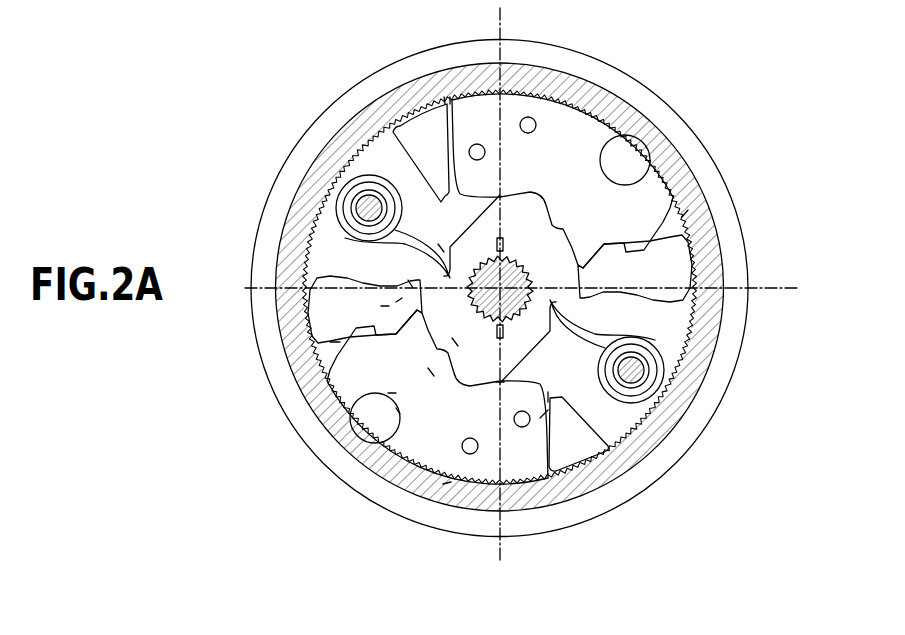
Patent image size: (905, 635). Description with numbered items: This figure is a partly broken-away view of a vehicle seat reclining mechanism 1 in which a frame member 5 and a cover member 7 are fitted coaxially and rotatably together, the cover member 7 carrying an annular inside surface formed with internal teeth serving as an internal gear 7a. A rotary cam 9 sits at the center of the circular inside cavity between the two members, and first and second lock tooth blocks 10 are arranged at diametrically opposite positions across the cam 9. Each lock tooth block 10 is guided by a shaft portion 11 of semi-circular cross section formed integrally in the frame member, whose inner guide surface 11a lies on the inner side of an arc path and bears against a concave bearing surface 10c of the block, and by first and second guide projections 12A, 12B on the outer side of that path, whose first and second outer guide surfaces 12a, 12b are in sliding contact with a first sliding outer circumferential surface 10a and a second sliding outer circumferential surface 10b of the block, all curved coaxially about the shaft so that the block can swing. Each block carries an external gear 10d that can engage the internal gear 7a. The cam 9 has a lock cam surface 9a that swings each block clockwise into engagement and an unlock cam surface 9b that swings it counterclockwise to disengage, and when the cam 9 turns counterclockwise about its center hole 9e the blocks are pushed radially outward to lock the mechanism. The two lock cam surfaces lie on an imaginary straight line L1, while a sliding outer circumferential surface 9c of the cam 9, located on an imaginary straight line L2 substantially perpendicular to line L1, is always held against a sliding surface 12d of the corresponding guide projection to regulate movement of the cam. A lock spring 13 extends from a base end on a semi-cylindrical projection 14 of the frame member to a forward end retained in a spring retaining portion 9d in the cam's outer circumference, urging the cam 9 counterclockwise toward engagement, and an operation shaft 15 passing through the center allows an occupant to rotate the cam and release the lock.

The vehicle seat reclining mechanism 1 is at (243, 48).
The frame member 5 is at (652, 106).
The cover member 7 is at (519, 287).
The internal gear 7a is at (661, 195).
The cam 9 is at (522, 251).
The lock cam surface 9a is at (502, 393).
The unlock cam surface 9b is at (430, 372).
The sliding outer circumferential surface 9c is at (412, 285).
The spring retaining portion 9d is at (440, 248).
The center hole 9e is at (455, 342).
The lock tooth block 10 is at (549, 185).
The first sliding outer circumferential surface 10a is at (398, 300).
The second sliding outer circumferential surface 10b is at (552, 397).
The bearing surface 10c is at (395, 415).
The external gear 10d is at (447, 487).
The shaft portion 11 is at (606, 171).
The inner guide surface 11a is at (392, 388).
The first guide projection 12A is at (673, 283).
The second guide projection 12B is at (444, 146).
The first outer guide surface 12a is at (385, 308).
The second outer guide surface 12b is at (538, 423).
The sliding surface 12d is at (334, 345).
The lock spring 13 is at (368, 172).
The projection 14 is at (363, 207).
The operation shaft 15 is at (682, 217).
The imaginary straight line L1 is at (507, 20).
The imaginary straight line L2 is at (765, 282).